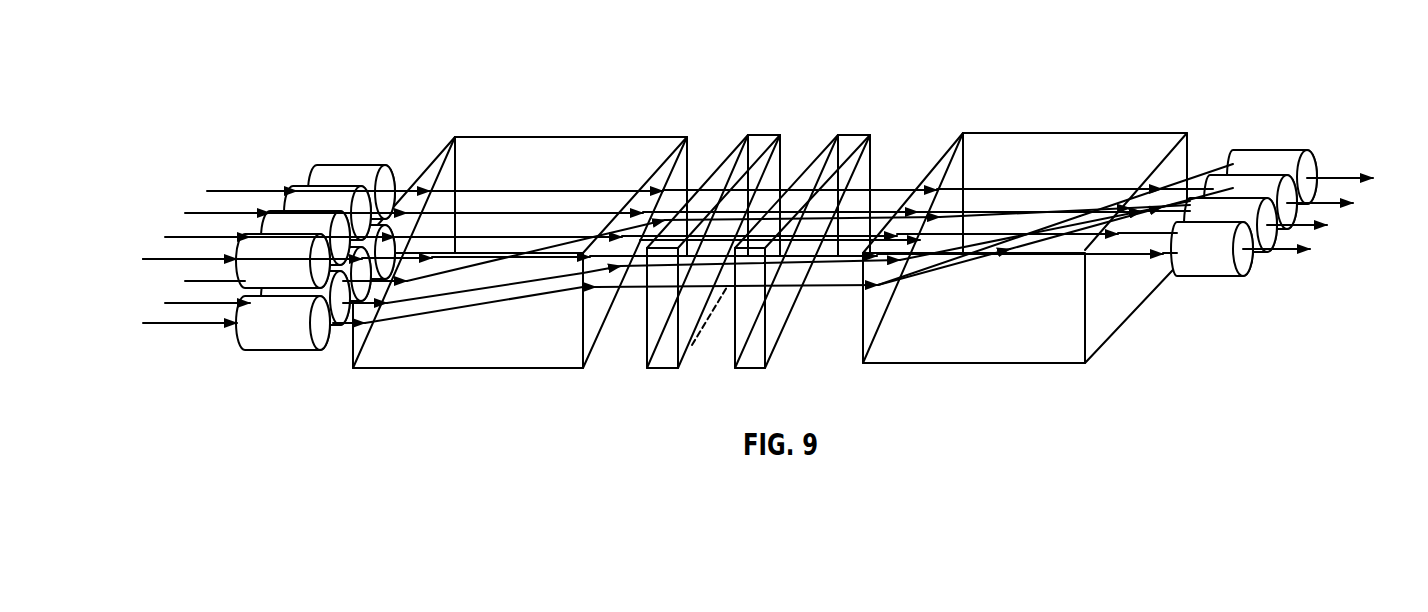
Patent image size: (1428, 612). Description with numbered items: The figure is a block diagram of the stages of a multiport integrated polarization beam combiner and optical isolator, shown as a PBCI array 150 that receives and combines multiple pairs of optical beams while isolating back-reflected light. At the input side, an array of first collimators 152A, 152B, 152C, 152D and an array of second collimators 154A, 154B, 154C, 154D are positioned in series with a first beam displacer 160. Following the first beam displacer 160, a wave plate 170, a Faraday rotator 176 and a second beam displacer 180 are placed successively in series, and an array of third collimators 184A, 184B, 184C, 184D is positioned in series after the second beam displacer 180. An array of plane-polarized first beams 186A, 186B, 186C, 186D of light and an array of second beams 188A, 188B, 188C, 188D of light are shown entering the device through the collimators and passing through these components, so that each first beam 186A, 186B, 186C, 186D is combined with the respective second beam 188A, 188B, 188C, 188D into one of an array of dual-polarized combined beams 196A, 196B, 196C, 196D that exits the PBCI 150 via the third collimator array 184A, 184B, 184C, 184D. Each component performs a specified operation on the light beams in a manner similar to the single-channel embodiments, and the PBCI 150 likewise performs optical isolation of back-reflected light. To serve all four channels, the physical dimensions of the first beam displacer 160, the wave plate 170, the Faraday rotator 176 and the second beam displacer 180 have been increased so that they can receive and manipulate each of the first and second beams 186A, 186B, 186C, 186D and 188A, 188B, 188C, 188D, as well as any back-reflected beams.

The PBCI array 150 is at (757, 249).
The first collimator 152A is at (283, 191).
The first collimator 152B is at (305, 170).
The first collimator 152C is at (327, 147).
The first collimator 152D is at (351, 125).
The second collimator 154A is at (309, 388).
The second collimator 154B is at (331, 363).
The second collimator 154C is at (354, 340).
The second collimator 154D is at (376, 317).
The first beam displacer 160 is at (520, 231).
The wave plate 170 is at (729, 229).
The Faraday rotator 176 is at (819, 229).
The second beam displacer 180 is at (1025, 227).
The third collimator 184A is at (1197, 180).
The third collimator 184B is at (1219, 157).
The third collimator 184C is at (1239, 135).
The third collimator 184D is at (1261, 111).
The first beam 186A is at (167, 220).
The first beam 186B is at (185, 197).
The first beam 186C is at (205, 174).
The first beam 186D is at (228, 152).
The second beam 188A is at (190, 389).
The second beam 188B is at (207, 368).
The second beam 188C is at (218, 345).
The second beam 188D is at (207, 323).
The combined beam 196A is at (1300, 262).
The combined beam 196B is at (1322, 238).
The combined beam 196C is at (1343, 216).
The combined beam 196D is at (1362, 192).